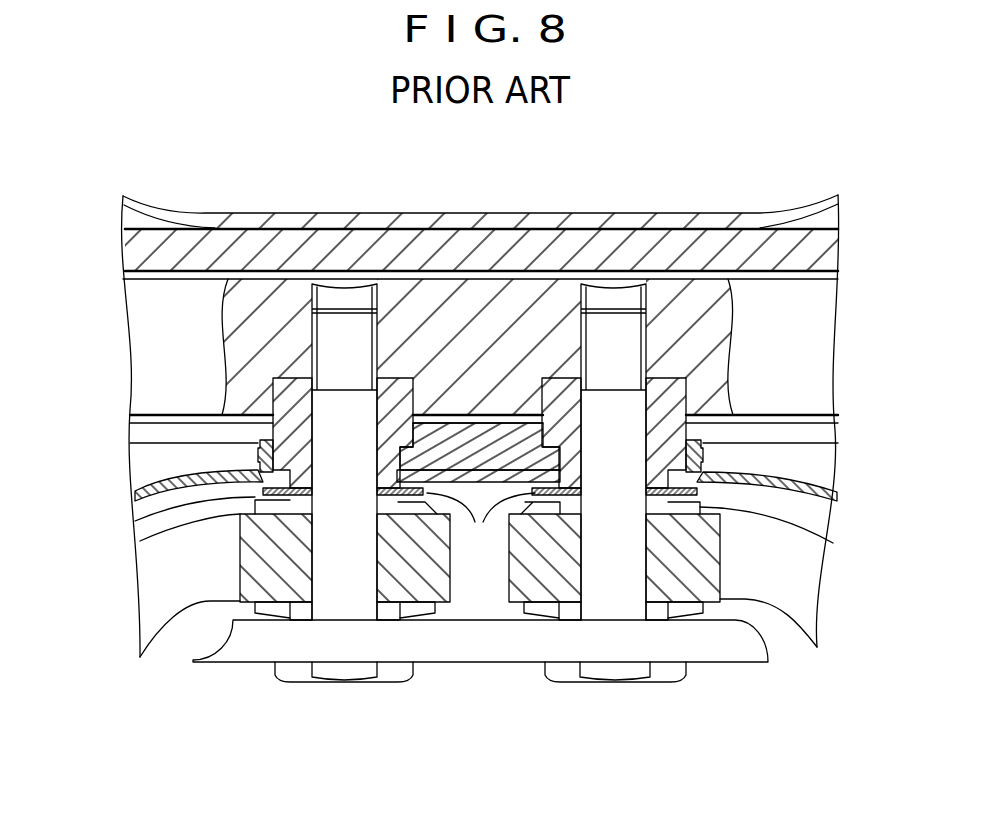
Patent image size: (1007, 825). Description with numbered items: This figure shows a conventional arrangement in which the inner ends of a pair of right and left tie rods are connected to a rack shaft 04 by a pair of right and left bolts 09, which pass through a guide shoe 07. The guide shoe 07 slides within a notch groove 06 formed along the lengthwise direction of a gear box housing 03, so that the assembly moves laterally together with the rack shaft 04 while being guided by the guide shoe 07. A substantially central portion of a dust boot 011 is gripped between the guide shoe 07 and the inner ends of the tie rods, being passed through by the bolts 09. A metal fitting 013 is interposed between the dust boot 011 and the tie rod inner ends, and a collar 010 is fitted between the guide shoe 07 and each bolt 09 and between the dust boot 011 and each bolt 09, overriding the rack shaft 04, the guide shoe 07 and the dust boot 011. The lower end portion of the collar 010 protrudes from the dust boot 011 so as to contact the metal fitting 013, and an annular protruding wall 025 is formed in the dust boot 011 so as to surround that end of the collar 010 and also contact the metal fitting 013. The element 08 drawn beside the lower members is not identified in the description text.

The dust boot 011 is at (260, 203).
The gear box housing 03 is at (755, 245).
The rack shaft 04 is at (812, 349).
The guide shoe 07 is at (480, 430).
The collar 010 is at (270, 392).
The notch groove 06 is at (158, 433).
The annular protruding wall 025 is at (137, 522).
The metal fitting 013 is at (472, 518).
The support bracket 08 is at (160, 590).
The bolts 09 is at (348, 682).